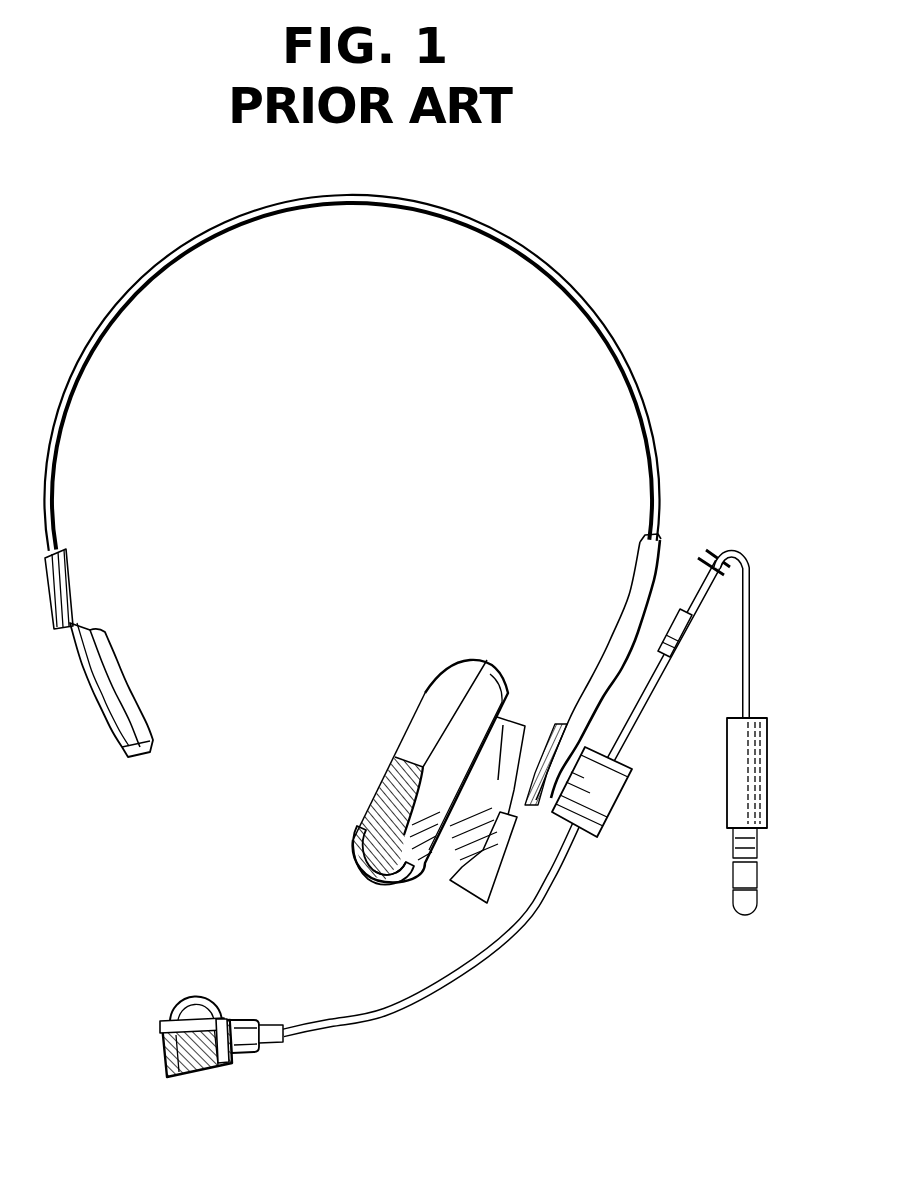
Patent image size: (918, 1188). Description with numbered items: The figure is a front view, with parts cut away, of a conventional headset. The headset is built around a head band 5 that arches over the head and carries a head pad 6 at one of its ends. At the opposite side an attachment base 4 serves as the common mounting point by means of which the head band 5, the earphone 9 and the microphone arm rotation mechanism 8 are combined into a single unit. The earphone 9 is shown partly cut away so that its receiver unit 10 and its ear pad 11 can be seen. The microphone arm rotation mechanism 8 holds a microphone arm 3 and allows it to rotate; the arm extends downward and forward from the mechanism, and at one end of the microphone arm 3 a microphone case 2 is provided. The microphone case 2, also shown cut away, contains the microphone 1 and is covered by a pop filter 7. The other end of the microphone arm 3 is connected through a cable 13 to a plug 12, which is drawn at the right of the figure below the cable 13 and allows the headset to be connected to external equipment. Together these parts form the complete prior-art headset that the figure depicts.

The microphone 1 is at (183, 1080).
The microphone case 2 is at (263, 1057).
The microphone arm 3 is at (465, 979).
The attachment base 4 is at (632, 598).
The head band 5 is at (455, 212).
The head pad 6 is at (72, 605).
The pop filter 7 is at (193, 998).
The microphone arm rotation mechanism 8 is at (618, 792).
The earphone 9 is at (508, 725).
The receiver unit 10 is at (397, 878).
The ear pad 11 is at (352, 832).
The plug 12 is at (735, 813).
The cable 13 is at (750, 550).